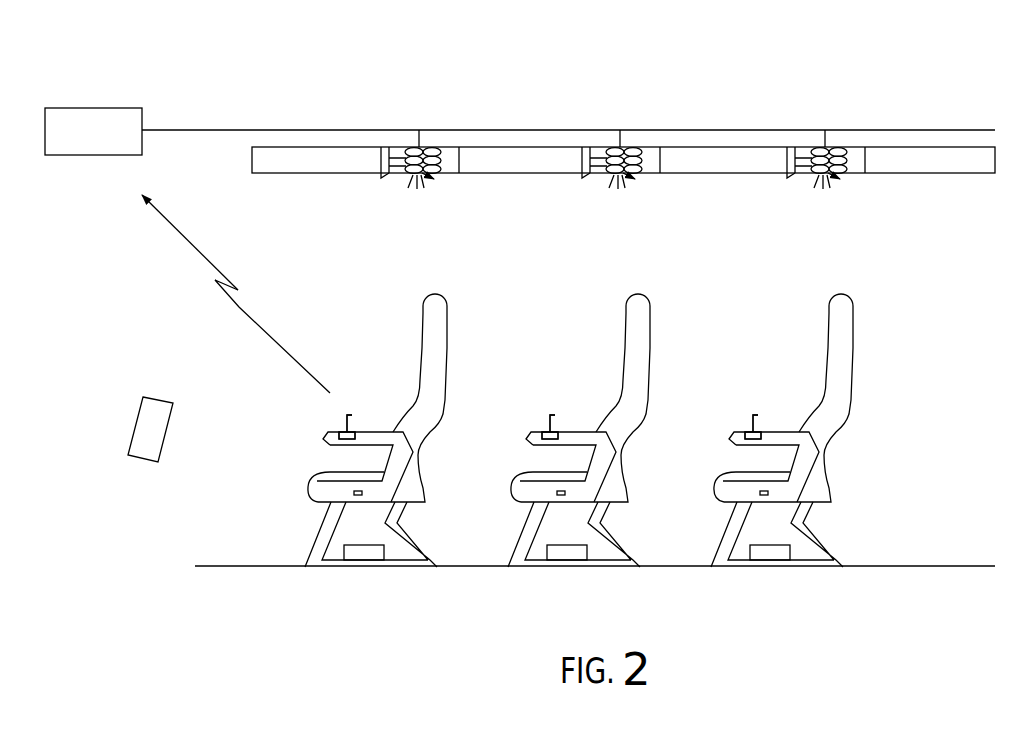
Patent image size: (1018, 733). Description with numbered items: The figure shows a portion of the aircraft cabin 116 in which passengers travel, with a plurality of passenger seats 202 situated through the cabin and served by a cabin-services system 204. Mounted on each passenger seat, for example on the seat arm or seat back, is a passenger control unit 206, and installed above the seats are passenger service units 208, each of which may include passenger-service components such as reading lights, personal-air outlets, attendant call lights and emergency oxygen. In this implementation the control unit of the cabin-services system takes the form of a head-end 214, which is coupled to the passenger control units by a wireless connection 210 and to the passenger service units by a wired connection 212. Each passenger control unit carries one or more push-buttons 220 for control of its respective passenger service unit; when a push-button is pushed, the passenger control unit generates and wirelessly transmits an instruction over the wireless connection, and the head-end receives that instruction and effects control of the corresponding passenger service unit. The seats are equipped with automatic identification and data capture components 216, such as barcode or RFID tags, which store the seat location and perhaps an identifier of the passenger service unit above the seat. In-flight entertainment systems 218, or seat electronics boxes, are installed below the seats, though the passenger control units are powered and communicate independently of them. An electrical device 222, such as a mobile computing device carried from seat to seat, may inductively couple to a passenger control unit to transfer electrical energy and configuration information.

The cabin 116 is at (968, 480).
The passenger seat 202 is at (413, 329).
The cabin-services system 204 is at (215, 67).
The passenger control unit 206 is at (332, 423).
The passenger service unit 208 is at (412, 207).
The wireless connection 210 is at (237, 310).
The wired connection 212 is at (283, 128).
The head-end 214 is at (95, 107).
The automatic identification and data capture component 216 is at (357, 491).
The in-flight entertainment system 218 is at (344, 553).
The push-button 220 is at (567, 420).
The electrical device 222 is at (137, 422).